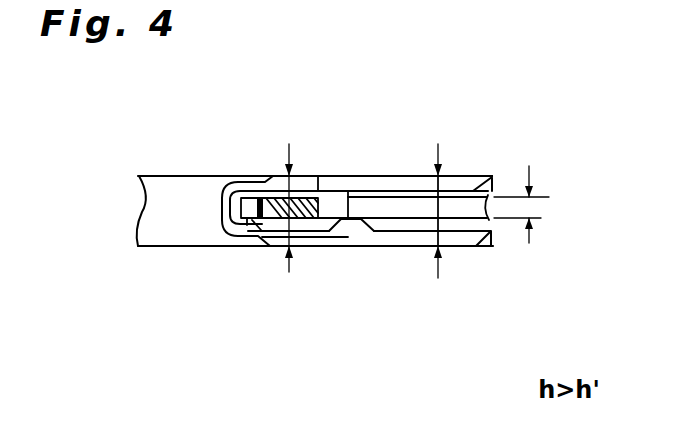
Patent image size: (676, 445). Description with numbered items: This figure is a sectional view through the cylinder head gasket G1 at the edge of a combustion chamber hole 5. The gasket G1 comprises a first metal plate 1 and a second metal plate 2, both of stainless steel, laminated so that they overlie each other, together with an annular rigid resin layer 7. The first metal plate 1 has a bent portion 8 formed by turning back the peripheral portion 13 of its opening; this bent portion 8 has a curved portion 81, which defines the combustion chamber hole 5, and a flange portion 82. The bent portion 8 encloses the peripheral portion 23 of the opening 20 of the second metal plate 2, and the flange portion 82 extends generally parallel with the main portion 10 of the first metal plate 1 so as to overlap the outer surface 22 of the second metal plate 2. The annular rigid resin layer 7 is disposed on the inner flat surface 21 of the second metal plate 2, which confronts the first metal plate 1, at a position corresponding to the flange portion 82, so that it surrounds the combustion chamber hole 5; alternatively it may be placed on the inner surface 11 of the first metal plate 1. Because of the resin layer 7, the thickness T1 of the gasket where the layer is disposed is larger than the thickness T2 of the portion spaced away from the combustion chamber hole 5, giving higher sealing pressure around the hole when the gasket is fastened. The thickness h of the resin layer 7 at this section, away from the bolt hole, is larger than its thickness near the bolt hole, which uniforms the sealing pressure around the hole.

The first metal plate 1 is at (438, 144).
The second metal plate 2 is at (412, 234).
The combustion chamber hole 5 is at (191, 191).
The annular rigid resin layer 7 is at (310, 189).
The bent portion 8 is at (292, 286).
The peripheral portion 13 is at (294, 204).
The main portion 10 is at (334, 175).
The inner surface 11 is at (388, 193).
The opening 20 is at (240, 228).
The inner flat surface 21 is at (348, 191).
The outer surface 22 is at (348, 235).
The peripheral portion 23 is at (264, 231).
The curved portion 81 is at (229, 208).
The flange portion 82 is at (318, 235).
The cylinder head gasket G1 is at (477, 172).
The thickness T1 is at (296, 231).
The thickness T2 is at (448, 230).
The thickness h is at (528, 204).